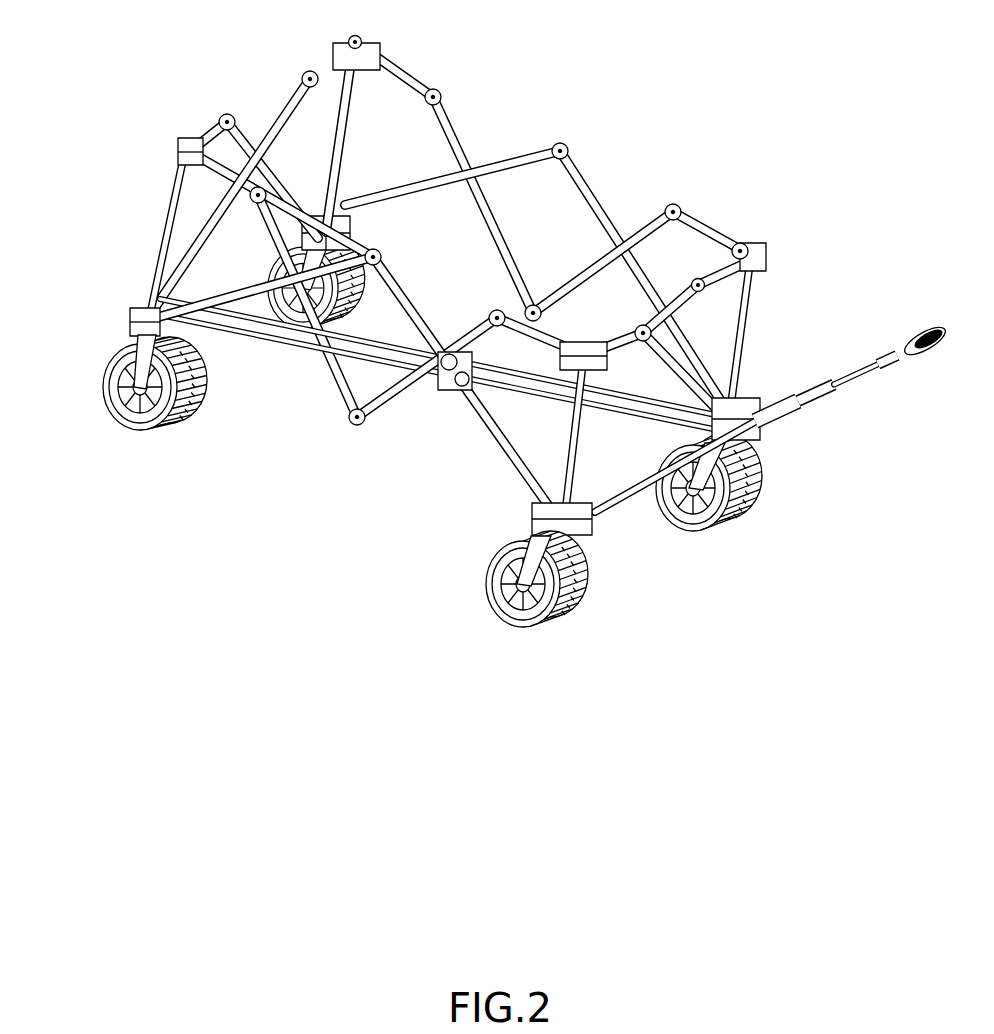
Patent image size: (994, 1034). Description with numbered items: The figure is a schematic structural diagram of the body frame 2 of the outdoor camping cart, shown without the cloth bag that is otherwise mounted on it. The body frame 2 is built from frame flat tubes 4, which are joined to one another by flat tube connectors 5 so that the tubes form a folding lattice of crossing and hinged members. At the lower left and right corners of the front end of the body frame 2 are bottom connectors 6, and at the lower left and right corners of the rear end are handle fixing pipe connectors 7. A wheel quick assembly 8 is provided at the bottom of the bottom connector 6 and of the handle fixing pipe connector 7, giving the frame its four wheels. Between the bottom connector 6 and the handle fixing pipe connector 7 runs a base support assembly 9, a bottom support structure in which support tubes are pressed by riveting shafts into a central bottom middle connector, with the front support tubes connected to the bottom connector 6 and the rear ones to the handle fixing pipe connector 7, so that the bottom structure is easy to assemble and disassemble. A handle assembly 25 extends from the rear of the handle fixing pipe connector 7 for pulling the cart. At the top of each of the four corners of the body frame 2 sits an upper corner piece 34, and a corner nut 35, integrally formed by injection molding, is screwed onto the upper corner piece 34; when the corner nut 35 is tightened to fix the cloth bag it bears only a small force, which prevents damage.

The body frame 2 is at (353, 120).
The frame flat tube 4 is at (513, 153).
The flat tube connector 5 is at (567, 147).
The bottom connector 6 is at (135, 310).
The handle fixing pipe connector 7 is at (515, 530).
The wheel quick assembly 8 is at (103, 373).
The base support assembly 9 is at (437, 387).
The handle assembly 25 is at (783, 396).
The upper corner piece 34 is at (762, 264).
The corner nut 35 is at (757, 246).